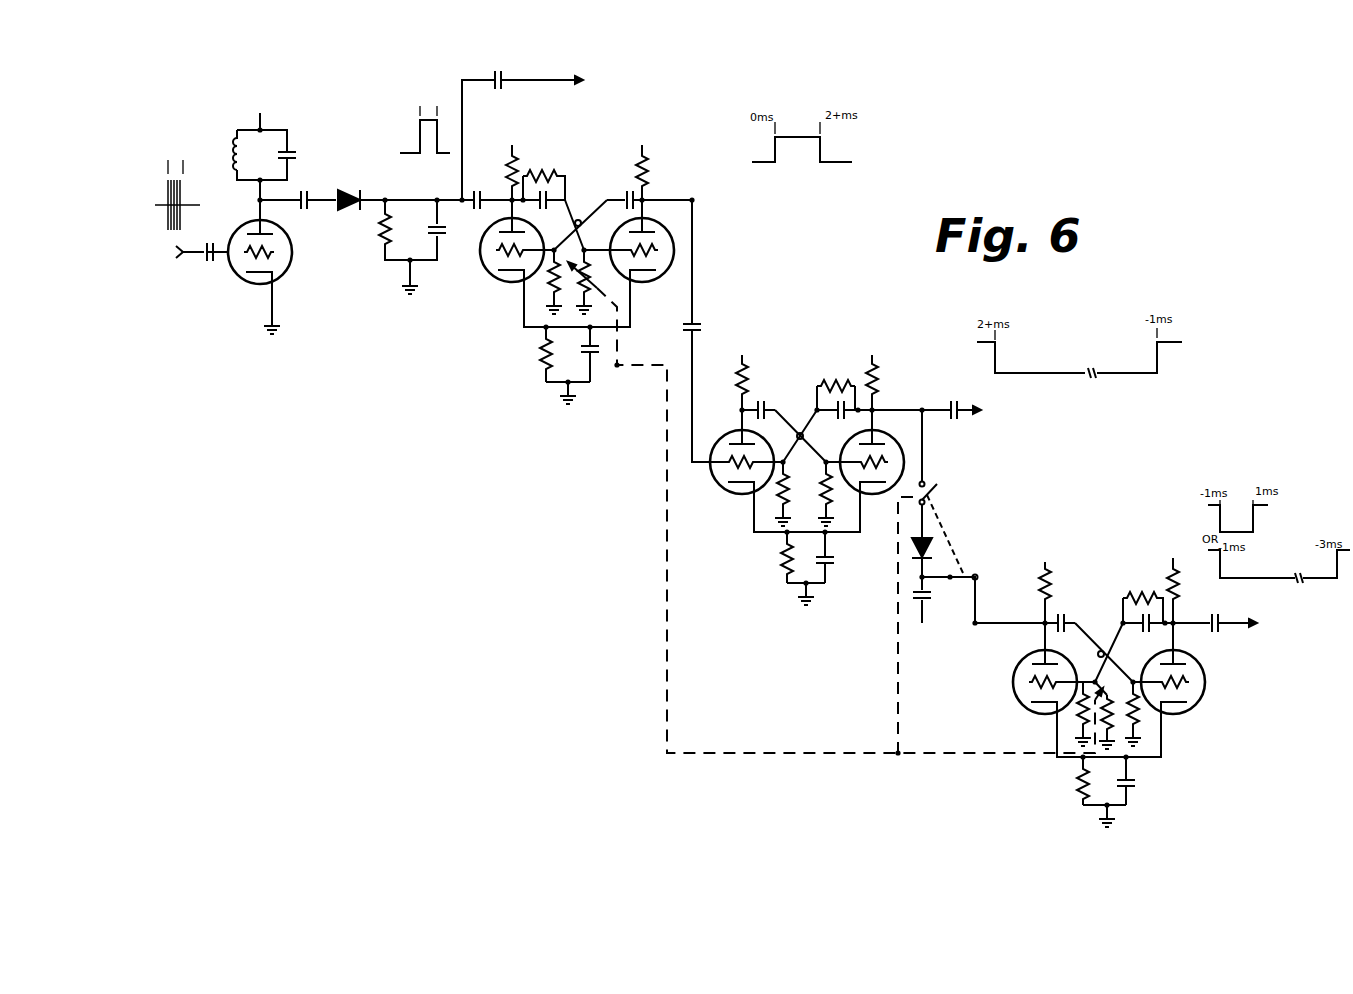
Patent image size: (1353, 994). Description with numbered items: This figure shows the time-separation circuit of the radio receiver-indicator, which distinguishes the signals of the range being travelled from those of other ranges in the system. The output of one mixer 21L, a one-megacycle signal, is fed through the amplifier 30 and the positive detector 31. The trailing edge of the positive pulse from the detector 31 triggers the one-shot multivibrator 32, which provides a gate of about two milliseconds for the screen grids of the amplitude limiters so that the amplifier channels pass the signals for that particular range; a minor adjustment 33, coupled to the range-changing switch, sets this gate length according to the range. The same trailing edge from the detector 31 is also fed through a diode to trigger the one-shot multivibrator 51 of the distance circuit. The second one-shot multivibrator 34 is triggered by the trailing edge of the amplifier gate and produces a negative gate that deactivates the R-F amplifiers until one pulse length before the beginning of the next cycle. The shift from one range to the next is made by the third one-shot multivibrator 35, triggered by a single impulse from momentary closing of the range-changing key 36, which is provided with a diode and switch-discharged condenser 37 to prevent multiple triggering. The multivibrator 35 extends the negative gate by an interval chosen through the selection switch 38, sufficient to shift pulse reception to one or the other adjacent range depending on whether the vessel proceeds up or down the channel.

The amplifier 30 is at (334, 167).
The positive detector 31 is at (417, 191).
The one-shot multivibrator 32 is at (587, 161).
The minor adjustment 33 is at (597, 288).
The second one-shot multivibrator 34 is at (805, 372).
The third one-shot multivibrator 35 is at (1100, 613).
The range-changing key 36 is at (939, 487).
The switch-discharged condenser 37 is at (932, 598).
The selection switch 38 is at (1112, 711).
The mixer 21L is at (182, 279).
The one-shot multivibrator 51 is at (546, 79).